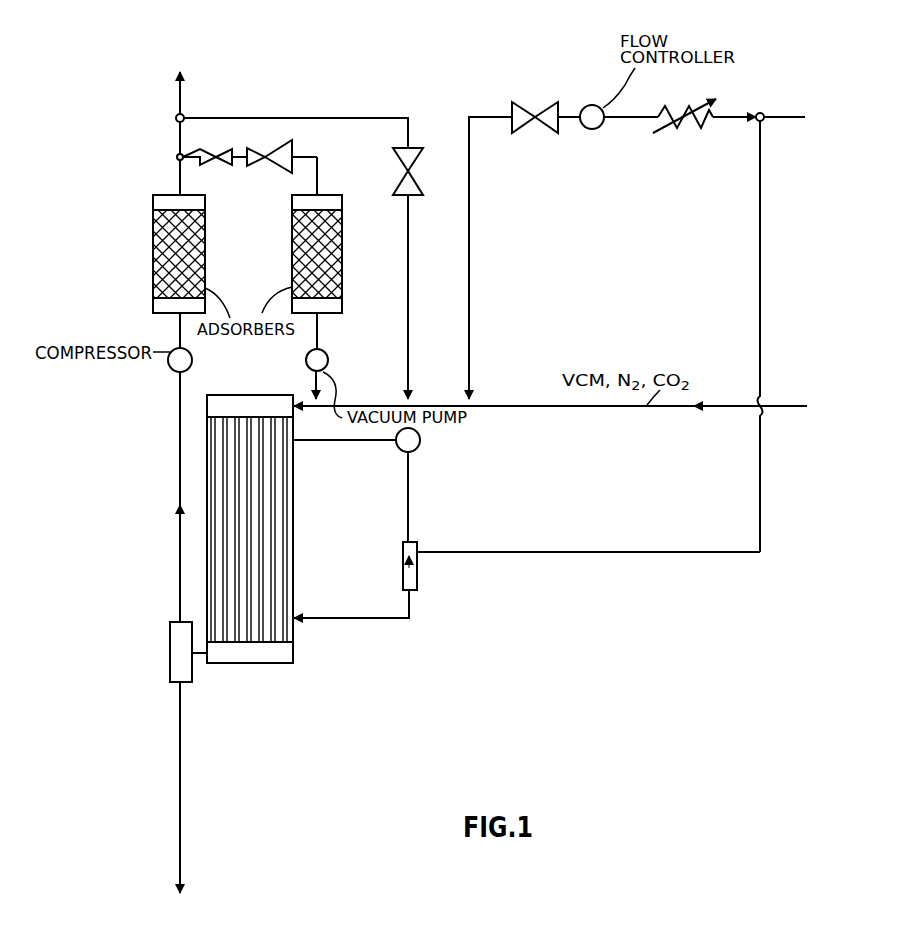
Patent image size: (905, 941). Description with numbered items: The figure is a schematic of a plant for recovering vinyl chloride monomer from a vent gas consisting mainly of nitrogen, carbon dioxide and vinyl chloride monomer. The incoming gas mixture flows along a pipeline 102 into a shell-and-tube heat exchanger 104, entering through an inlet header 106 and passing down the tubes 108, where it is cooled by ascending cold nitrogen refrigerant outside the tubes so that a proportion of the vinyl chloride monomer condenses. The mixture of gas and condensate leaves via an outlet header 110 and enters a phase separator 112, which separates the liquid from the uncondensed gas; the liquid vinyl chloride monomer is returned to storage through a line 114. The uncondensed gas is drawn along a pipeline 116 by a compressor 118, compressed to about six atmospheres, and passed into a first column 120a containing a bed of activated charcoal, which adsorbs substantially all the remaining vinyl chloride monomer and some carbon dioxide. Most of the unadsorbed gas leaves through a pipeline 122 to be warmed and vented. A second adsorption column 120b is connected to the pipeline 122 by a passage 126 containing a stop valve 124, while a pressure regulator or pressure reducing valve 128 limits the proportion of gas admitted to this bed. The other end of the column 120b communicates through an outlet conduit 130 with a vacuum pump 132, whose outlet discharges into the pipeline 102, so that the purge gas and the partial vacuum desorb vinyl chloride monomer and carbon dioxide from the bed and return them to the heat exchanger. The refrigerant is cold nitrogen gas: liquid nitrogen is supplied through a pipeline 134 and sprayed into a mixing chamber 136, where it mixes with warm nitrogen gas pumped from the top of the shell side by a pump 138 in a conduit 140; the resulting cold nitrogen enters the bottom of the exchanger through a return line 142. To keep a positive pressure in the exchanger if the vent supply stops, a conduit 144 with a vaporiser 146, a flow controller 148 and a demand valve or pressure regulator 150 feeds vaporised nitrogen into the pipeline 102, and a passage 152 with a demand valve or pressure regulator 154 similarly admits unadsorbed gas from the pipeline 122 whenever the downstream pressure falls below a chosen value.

The pipeline 102 is at (617, 406).
The shell-and-tube heat exchanger 104 is at (293, 503).
The upper header 106 is at (247, 405).
The tubes 108 is at (250, 548).
The outlet header 110 is at (255, 655).
The phase separator 112 is at (178, 660).
The line 114 is at (180, 765).
The pipeline 116 is at (180, 435).
The compressor 118 is at (192, 352).
The first column 120a is at (205, 253).
The second adsorption column 120b is at (342, 253).
The pipeline 122 is at (180, 178).
The stop valve 124 is at (215, 152).
The passage 126 is at (317, 170).
The pressure regulator or pressure reducing valve 128 is at (272, 150).
The outlet conduit 130 is at (317, 335).
The vacuum pump 132 is at (328, 360).
The pipeline 134 is at (587, 552).
The mixing chamber 136 is at (417, 575).
The pump 138 is at (420, 445).
The conduit 140 is at (353, 440).
The line 142 is at (368, 618).
The conduit 144 is at (750, 110).
The vaporiser 146 is at (678, 112).
The flow controller 148 is at (592, 105).
The demand valve or pressure regulator 150 is at (532, 108).
The passage 152 is at (343, 116).
The demand valve or pressure regulator 154 is at (423, 170).